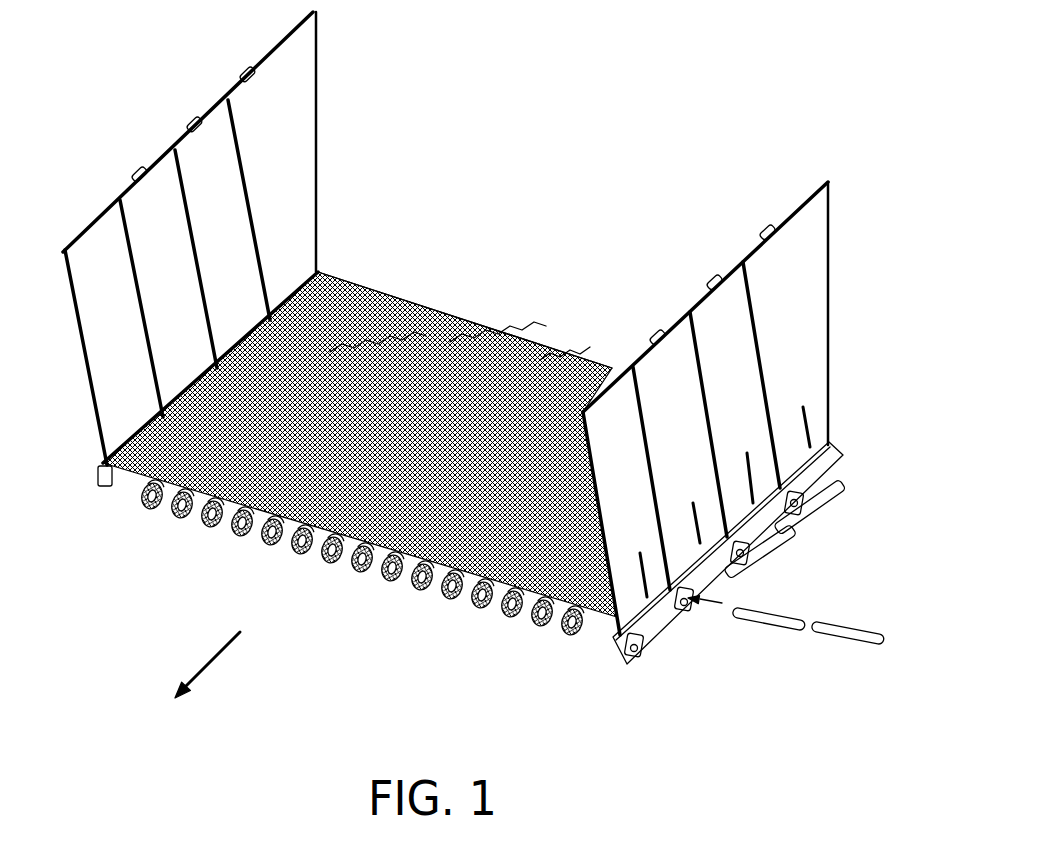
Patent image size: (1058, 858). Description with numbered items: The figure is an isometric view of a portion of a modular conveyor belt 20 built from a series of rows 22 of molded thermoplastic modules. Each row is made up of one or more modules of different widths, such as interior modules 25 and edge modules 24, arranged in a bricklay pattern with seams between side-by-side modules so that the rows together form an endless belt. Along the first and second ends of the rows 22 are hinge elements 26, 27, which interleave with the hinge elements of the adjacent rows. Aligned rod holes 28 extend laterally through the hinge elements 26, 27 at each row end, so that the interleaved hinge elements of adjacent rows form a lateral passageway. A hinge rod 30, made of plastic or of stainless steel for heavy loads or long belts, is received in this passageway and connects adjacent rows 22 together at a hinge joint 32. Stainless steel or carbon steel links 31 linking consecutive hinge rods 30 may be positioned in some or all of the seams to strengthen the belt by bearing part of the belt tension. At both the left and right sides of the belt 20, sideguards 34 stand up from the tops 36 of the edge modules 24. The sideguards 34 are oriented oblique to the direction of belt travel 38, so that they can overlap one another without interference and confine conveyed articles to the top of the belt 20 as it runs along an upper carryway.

The conveyor belt 20 is at (521, 84).
The rows 22 is at (827, 503).
The edge modules 24 is at (165, 438).
The interior modules 25 is at (362, 565).
The hinge elements 26 is at (523, 615).
The hinge elements 27 is at (570, 357).
The rod holes 28 is at (163, 505).
The hinge rod 30 is at (765, 617).
The links 31 is at (476, 350).
The hinge joint 32 is at (353, 360).
The sideguards 34 is at (275, 125).
The tops 36 is at (588, 625).
The direction of belt travel 38 is at (224, 655).